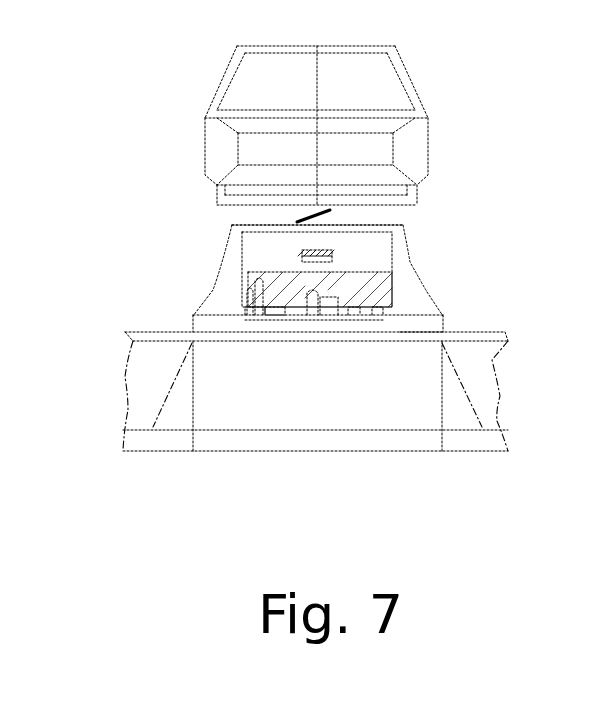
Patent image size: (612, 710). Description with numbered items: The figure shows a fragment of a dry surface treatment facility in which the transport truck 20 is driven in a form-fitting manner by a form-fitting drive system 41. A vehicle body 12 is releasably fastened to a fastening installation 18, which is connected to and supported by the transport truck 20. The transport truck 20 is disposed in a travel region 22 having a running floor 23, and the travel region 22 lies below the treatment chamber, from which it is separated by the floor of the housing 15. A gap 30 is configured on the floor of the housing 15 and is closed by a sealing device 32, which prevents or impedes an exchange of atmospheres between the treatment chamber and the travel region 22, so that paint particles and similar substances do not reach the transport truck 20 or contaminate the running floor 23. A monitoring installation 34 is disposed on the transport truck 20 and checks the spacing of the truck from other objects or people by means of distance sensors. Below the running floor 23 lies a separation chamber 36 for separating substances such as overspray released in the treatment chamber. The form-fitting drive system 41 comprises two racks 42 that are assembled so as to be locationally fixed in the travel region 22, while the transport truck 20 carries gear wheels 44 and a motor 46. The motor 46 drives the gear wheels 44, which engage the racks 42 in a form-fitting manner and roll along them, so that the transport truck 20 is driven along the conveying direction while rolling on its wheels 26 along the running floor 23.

The vehicle body 12 is at (403, 70).
The housing 15 is at (220, 270).
The fastening installation 18 is at (340, 220).
The transport truck 20 is at (392, 285).
The travel region 22 is at (417, 302).
The running floor 23 is at (197, 318).
The wheel 26 is at (267, 314).
The gap 30 is at (335, 230).
The sealing device 32 is at (307, 216).
The monitoring installation 34 is at (302, 252).
The separation chamber 36 is at (115, 395).
The form-fitting drive system 41 is at (343, 375).
The rack 42 is at (250, 320).
The gear wheel 44 is at (247, 299).
The motor 46 is at (332, 313).